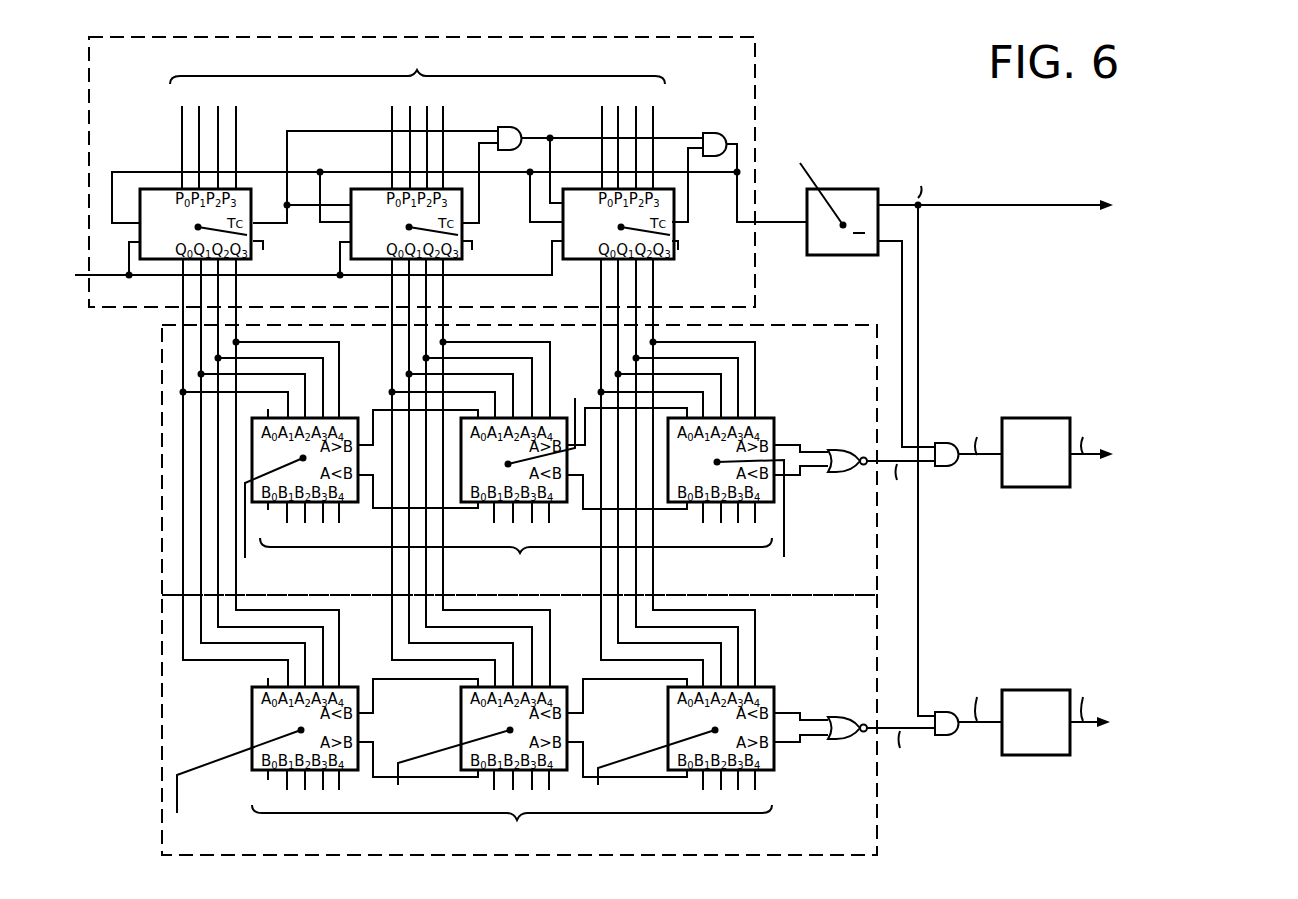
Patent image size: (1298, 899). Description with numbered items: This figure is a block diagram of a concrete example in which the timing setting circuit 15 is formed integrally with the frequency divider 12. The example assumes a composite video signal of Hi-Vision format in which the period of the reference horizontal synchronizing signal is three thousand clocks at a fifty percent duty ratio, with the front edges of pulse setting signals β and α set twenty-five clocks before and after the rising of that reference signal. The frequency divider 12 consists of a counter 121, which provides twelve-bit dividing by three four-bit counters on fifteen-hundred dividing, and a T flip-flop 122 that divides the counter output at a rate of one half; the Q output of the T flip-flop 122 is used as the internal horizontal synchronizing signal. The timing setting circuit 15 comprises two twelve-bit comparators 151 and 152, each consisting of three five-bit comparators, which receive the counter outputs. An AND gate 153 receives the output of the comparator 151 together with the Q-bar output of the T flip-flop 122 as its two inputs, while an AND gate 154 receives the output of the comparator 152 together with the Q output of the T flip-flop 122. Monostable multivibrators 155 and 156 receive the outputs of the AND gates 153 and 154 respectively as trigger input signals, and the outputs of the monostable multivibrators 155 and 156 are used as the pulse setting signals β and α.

The frequency divider 12 is at (862, 112).
The counter 121 is at (755, 67).
The T-FF (flip-flop) 122 is at (853, 257).
The timing setting circuit 15 is at (1083, 380).
The 12-bit comparator 151 is at (162, 453).
The 12-bit comparator 152 is at (162, 688).
The AND gate 153 is at (947, 467).
The AND gate 154 is at (947, 736).
The MMV (monostable multivibrator) 155 is at (1047, 488).
The MMV (monostable multivibrator) 156 is at (1045, 690).